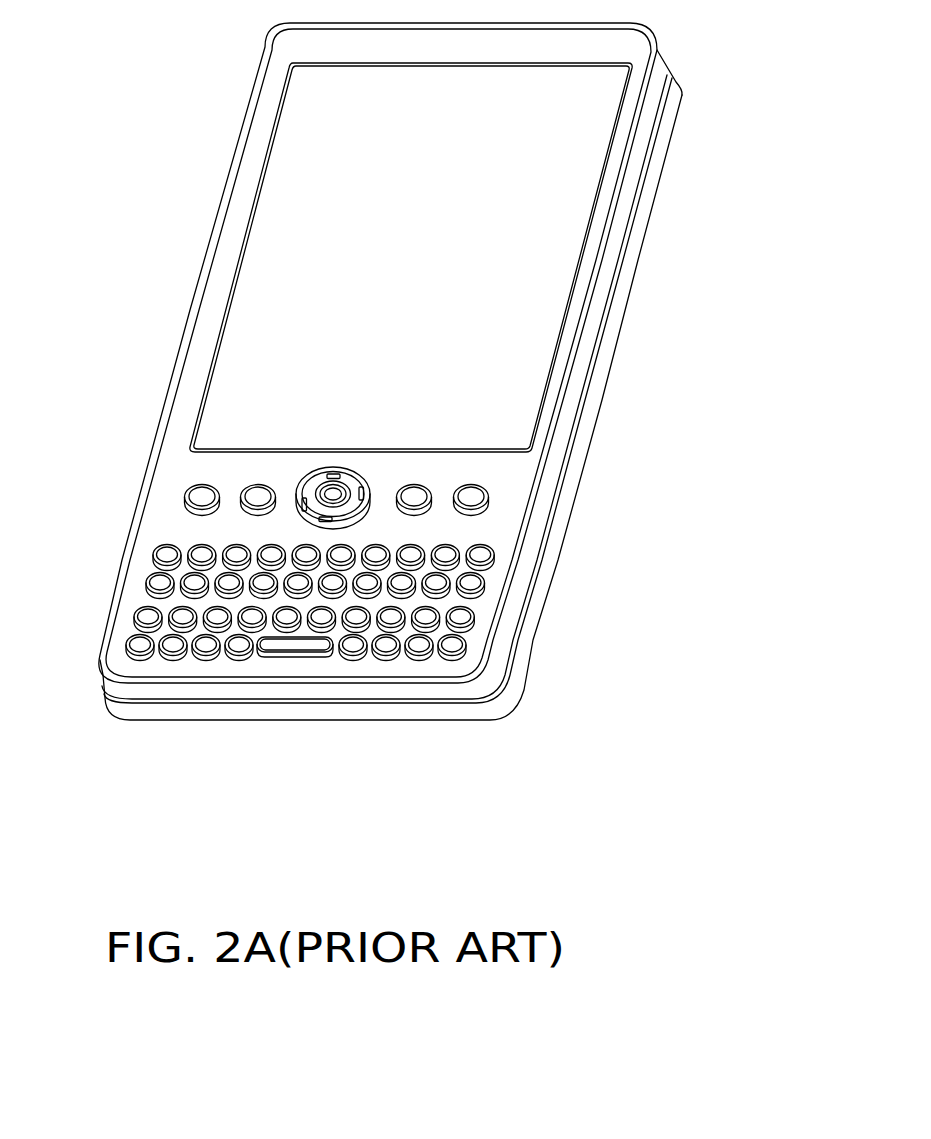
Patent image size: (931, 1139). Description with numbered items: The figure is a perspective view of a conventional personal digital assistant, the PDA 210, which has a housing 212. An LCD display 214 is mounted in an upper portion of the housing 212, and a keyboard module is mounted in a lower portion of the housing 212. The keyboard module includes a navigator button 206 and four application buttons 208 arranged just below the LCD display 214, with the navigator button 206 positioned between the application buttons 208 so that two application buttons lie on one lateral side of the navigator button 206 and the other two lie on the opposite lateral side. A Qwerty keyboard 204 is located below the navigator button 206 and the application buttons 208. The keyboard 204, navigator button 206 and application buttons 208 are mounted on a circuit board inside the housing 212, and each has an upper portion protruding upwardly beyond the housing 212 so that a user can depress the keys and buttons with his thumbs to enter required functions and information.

The Qwerty keyboard 204 is at (222, 584).
The navigator button 206 is at (322, 478).
The application buttons 208 is at (256, 496).
The PDA 210 is at (421, 420).
The housing 212 is at (610, 293).
The LCD display 214 is at (563, 128).